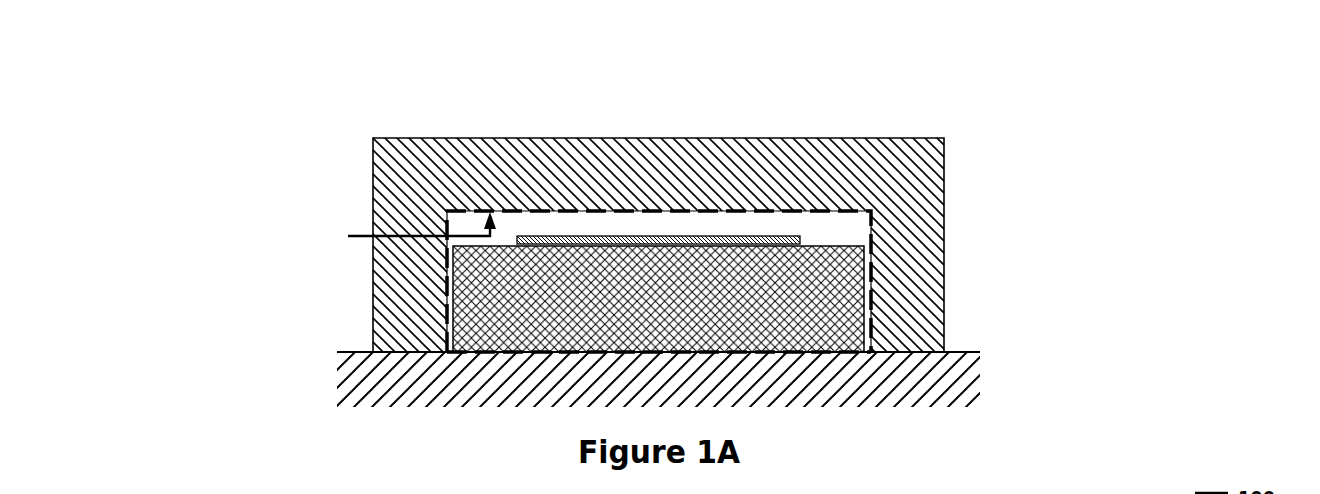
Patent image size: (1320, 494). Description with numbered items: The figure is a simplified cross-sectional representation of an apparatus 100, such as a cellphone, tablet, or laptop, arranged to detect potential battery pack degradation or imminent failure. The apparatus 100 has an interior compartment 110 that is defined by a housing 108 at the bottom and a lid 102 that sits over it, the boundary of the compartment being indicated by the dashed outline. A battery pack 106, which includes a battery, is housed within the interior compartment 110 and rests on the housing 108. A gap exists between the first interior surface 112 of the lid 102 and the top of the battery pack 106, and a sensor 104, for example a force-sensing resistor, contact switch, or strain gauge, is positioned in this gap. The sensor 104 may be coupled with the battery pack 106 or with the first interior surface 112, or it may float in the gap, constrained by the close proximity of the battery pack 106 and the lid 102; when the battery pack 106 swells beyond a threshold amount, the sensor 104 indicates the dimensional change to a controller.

The apparatus 100 is at (1122, 83).
The lid 102 is at (908, 169).
The sensor 104 is at (757, 240).
The battery pack 106 is at (819, 299).
The housing 108 is at (895, 383).
The interior compartment 110 is at (503, 208).
The first interior surface 112 is at (400, 231).